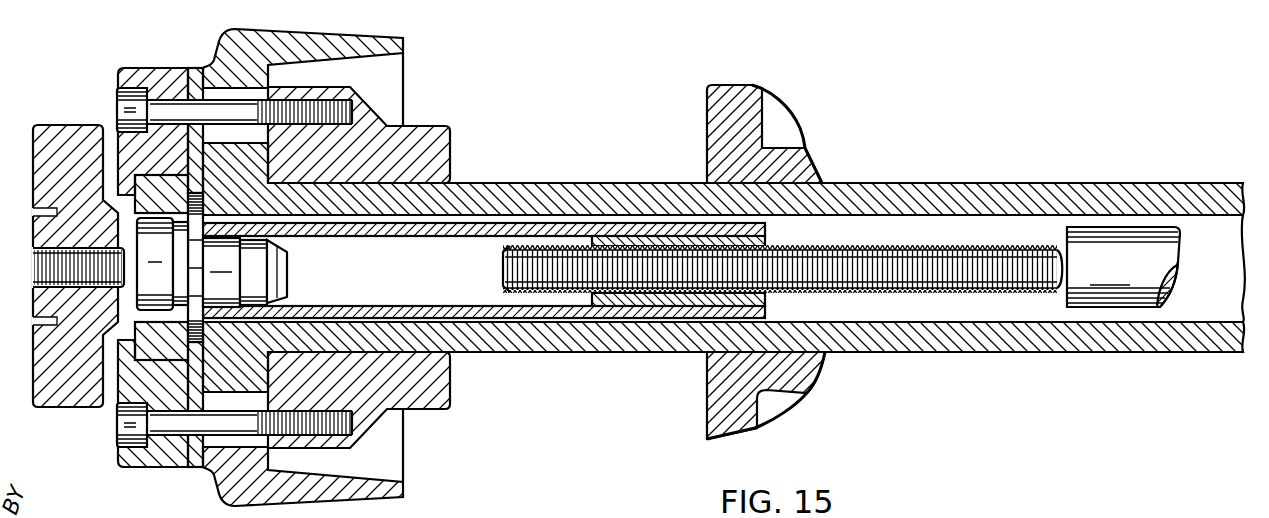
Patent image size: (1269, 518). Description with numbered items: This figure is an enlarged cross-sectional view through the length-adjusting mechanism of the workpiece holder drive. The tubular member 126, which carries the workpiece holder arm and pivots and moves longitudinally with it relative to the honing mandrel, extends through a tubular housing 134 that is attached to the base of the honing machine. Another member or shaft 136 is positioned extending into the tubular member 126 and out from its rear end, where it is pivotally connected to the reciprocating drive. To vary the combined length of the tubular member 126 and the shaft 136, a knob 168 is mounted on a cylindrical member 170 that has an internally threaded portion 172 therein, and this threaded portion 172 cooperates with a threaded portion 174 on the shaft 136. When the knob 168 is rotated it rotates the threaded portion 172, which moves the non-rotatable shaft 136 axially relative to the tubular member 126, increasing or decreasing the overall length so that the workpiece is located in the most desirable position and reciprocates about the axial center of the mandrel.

The tubular member 126 is at (937, 353).
The tubular housing 134 is at (702, 403).
The shaft 136 is at (1115, 227).
The knob 168 is at (30, 137).
The cylindrical member 170 is at (513, 318).
The internally threaded portion 172 is at (662, 307).
The threaded portion 174 is at (555, 245).